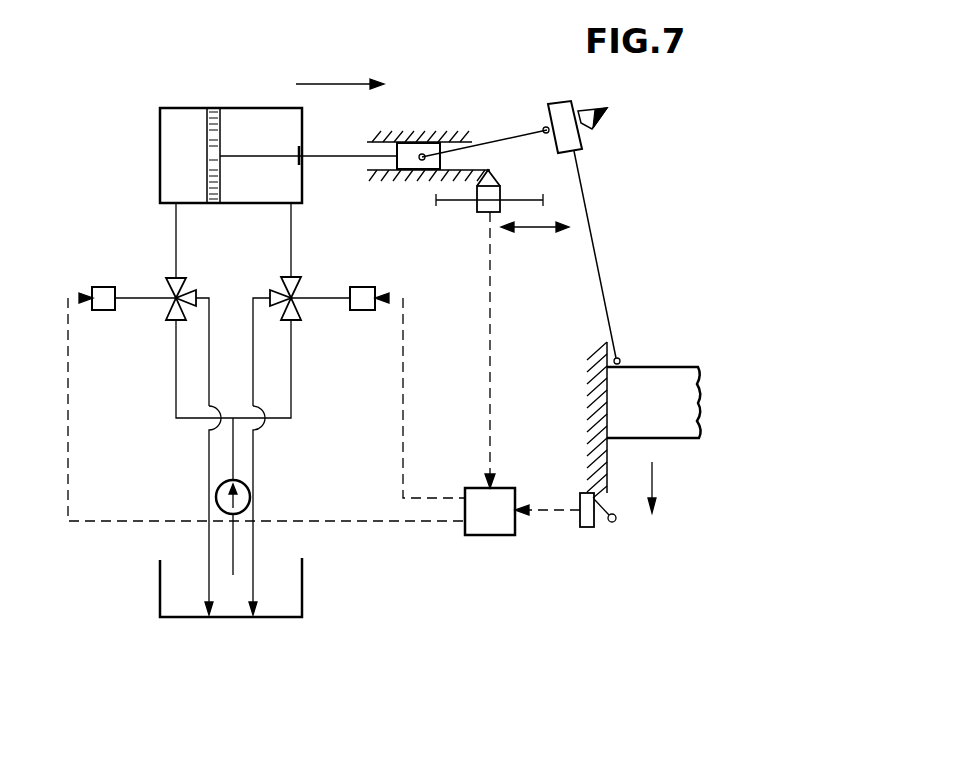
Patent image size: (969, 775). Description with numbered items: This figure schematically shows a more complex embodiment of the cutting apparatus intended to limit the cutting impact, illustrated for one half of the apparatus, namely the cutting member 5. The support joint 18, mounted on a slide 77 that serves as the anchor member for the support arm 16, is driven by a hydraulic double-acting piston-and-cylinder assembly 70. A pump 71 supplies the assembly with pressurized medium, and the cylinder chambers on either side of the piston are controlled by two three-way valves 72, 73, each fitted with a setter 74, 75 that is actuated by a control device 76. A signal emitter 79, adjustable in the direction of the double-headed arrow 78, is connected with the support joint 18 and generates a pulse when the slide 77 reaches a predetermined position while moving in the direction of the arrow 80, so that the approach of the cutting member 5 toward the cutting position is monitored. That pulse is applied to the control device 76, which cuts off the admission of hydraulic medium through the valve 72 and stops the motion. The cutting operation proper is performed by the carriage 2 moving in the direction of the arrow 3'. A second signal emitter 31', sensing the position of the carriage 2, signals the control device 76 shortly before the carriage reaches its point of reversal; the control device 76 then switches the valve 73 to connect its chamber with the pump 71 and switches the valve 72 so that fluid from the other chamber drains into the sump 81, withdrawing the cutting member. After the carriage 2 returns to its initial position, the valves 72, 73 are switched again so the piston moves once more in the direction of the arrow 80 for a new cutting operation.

The hydraulic double-acting piston-and-cylinder assembly 70 is at (176, 108).
The arrow 80 is at (325, 82).
The support joint 18 is at (422, 154).
The slide 77 is at (408, 170).
The support arm 16 is at (512, 136).
The cutting member 5 is at (558, 103).
The signal emitter 79 is at (484, 210).
The double-headed arrow 78 is at (537, 231).
The carriage 2 is at (645, 380).
The arrow 3' is at (667, 487).
The control device 76 is at (490, 535).
The signal emitter 31' is at (565, 543).
The three-way valve 72 is at (170, 292).
The three-way valve 73 is at (300, 284).
The setter 74 is at (104, 288).
The setter 75 is at (366, 288).
The pump 71 is at (245, 498).
The sump 81 is at (305, 586).